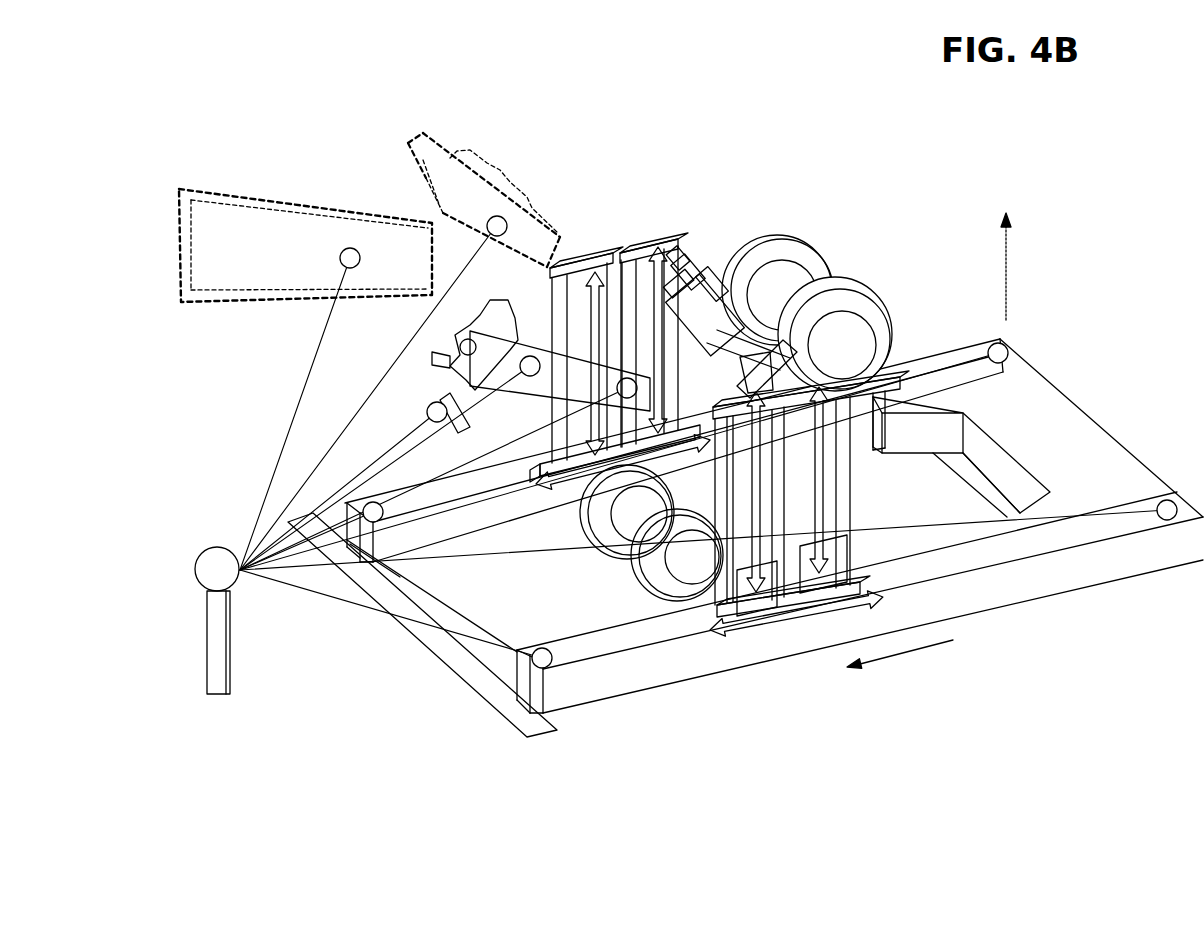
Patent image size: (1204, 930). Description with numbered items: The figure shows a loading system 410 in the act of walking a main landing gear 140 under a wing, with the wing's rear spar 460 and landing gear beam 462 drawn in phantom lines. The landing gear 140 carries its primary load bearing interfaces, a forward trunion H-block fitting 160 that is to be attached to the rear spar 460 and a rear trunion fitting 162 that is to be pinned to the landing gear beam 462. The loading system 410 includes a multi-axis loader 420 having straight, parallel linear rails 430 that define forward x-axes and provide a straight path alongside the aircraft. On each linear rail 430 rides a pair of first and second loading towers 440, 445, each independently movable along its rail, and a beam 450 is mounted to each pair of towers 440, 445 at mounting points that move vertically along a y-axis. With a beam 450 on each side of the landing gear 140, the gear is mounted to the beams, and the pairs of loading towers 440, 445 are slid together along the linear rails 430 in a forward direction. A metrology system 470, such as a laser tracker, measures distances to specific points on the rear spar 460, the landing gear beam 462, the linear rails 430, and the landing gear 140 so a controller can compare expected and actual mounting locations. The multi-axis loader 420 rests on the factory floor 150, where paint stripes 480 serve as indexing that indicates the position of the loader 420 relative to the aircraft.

The main landing gear 140 is at (882, 300).
The factory floor 150 is at (546, 597).
The forward trunion H-block fitting 160 is at (433, 408).
The rear trunion fitting 162 is at (506, 312).
The loading system 410 is at (774, 448).
The multi-axis loader 420 is at (1069, 386).
The linear rails 430 is at (774, 526).
The first loading tower 440 is at (552, 264).
The second loading tower 445 is at (673, 233).
The beam 450 is at (710, 270).
The rear spar 460 is at (268, 226).
The landing gear beam 462 is at (490, 177).
The metrology system 470 is at (232, 652).
The paint stripes 480 is at (460, 662).